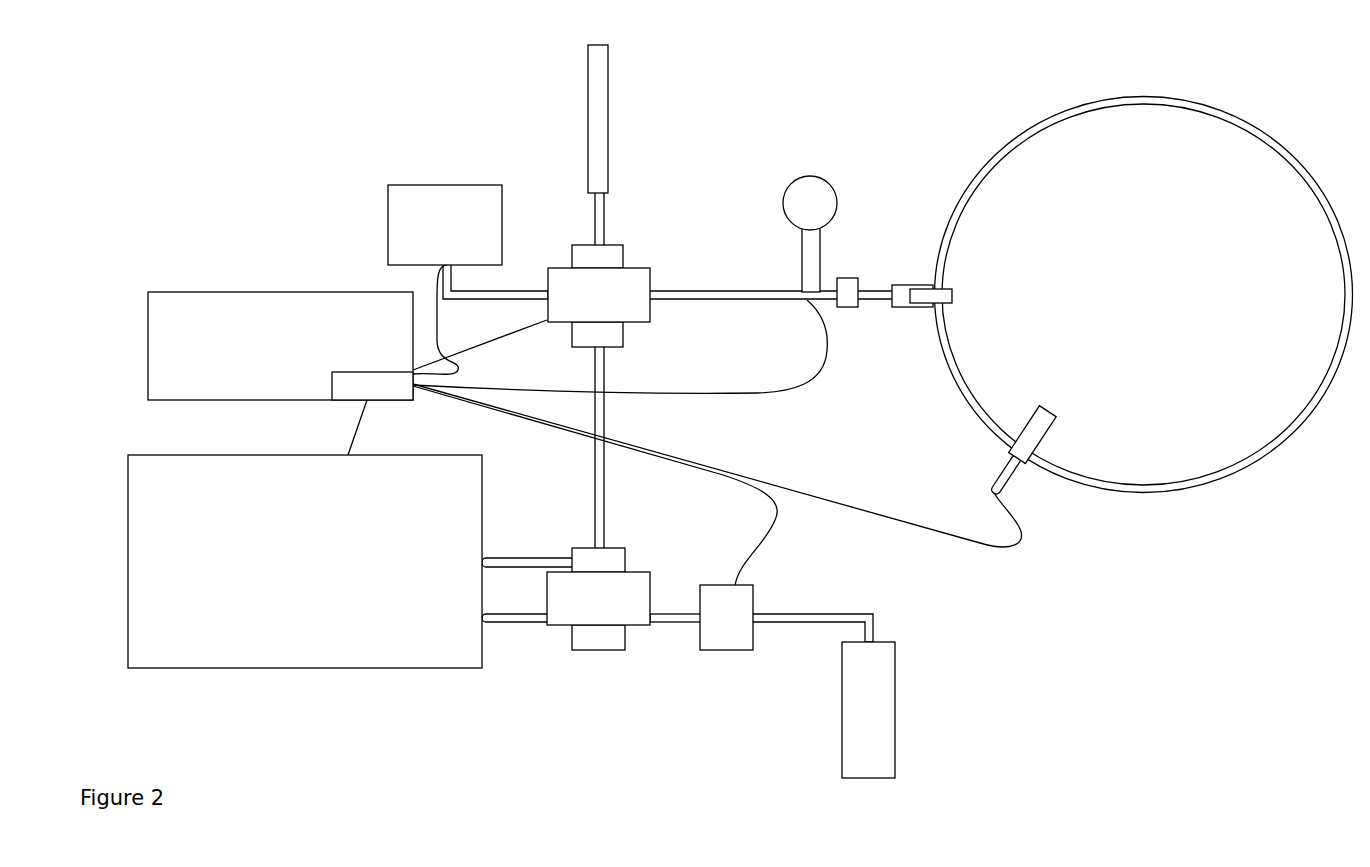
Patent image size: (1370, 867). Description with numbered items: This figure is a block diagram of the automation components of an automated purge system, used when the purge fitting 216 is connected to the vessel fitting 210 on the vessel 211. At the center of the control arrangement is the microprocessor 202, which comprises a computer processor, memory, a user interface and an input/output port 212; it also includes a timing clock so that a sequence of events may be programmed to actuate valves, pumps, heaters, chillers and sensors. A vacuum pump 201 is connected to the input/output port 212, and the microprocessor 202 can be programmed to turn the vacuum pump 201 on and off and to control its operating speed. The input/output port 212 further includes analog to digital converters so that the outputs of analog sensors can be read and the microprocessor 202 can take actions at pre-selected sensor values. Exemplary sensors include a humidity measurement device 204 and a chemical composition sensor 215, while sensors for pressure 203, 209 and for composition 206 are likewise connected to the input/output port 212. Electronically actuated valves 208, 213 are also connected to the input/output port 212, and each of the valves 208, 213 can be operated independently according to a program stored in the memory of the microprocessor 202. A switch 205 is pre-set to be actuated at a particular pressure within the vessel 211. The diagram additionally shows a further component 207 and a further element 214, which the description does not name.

The vacuum pump 201 is at (305, 590).
The microprocessor 202 is at (280, 348).
The pressure sensor 203 is at (721, 635).
The humidity measurement device 204 is at (897, 710).
The switch 205 is at (858, 274).
The composition sensor 206 is at (445, 201).
The sample tube 207 is at (565, 119).
The electronically actuated valve 208 is at (614, 286).
The pressure sensor 209 is at (792, 222).
The vessel fitting 210 is at (932, 282).
The vessel 211 is at (1015, 126).
The input/output port 212 is at (335, 404).
The electronically actuated valve 213 is at (598, 621).
The seal 214 is at (872, 310).
The chemical composition sensor 215 is at (745, 465).
The purge fitting 216 is at (913, 315).